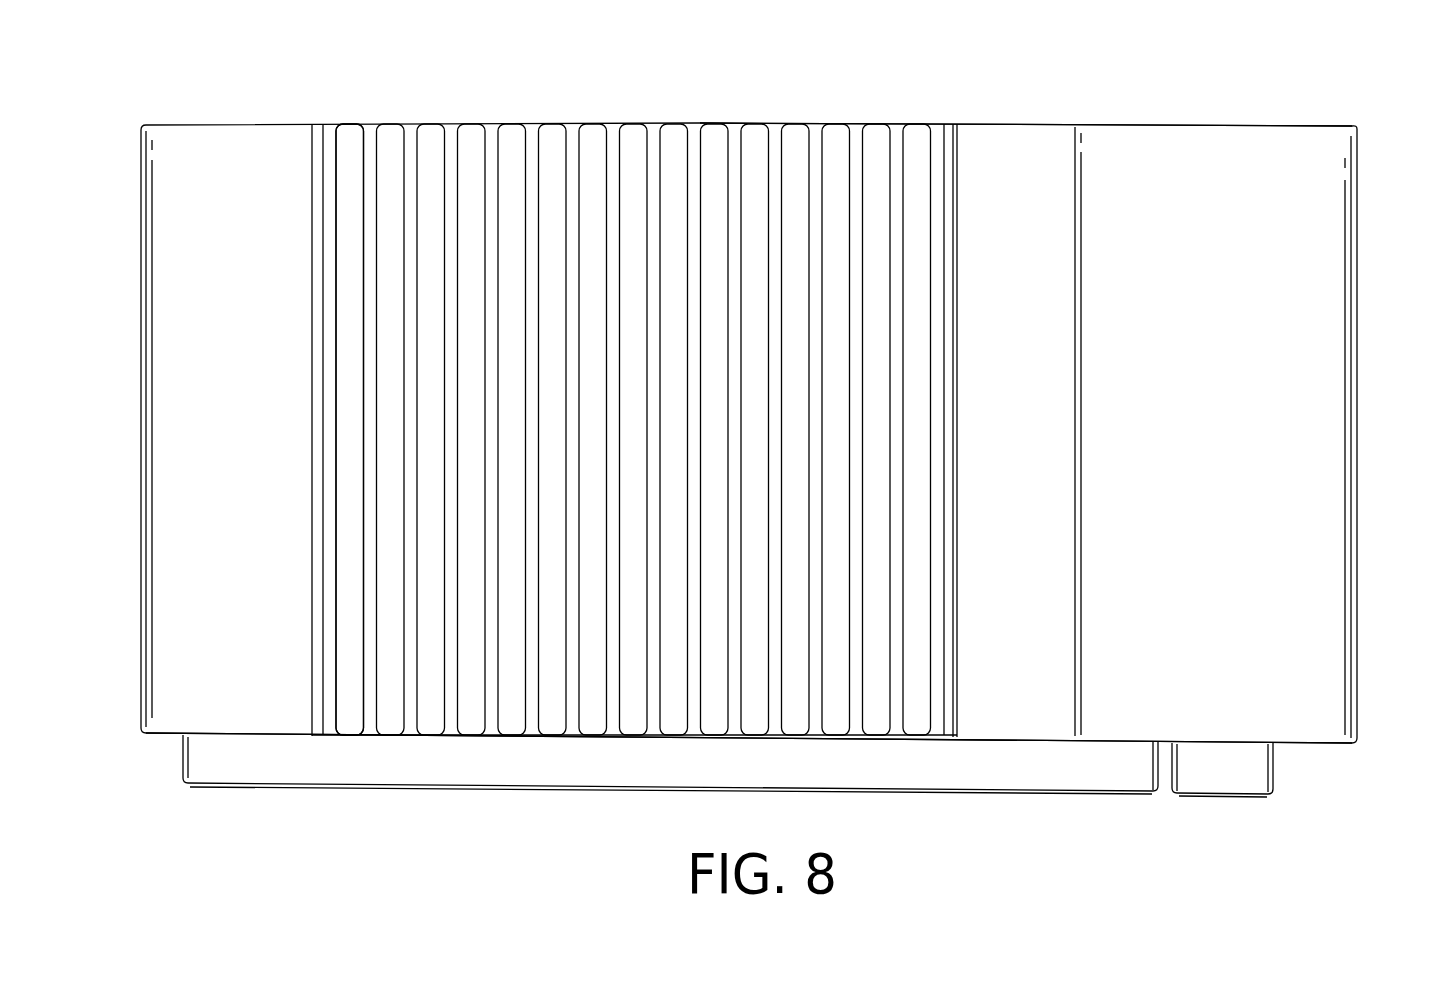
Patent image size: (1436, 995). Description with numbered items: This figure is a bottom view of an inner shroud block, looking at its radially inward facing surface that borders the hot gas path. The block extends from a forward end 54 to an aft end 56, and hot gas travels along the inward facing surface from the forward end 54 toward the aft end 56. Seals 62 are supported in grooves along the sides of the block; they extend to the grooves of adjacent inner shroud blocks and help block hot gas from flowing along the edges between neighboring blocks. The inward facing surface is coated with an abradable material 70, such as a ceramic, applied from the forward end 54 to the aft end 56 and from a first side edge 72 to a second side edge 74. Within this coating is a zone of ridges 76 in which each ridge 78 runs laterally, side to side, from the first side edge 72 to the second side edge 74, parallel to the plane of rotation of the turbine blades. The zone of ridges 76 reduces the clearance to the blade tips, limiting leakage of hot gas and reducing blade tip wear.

The forward end 54 is at (108, 436).
The aft end 56 is at (1392, 436).
The seals 62 is at (422, 774).
The abradable material 70 is at (1026, 455).
The first side edge 72 is at (1008, 743).
The second side edge 74 is at (1008, 124).
The zone of ridges 76 is at (958, 110).
The ridge 78 is at (368, 722).